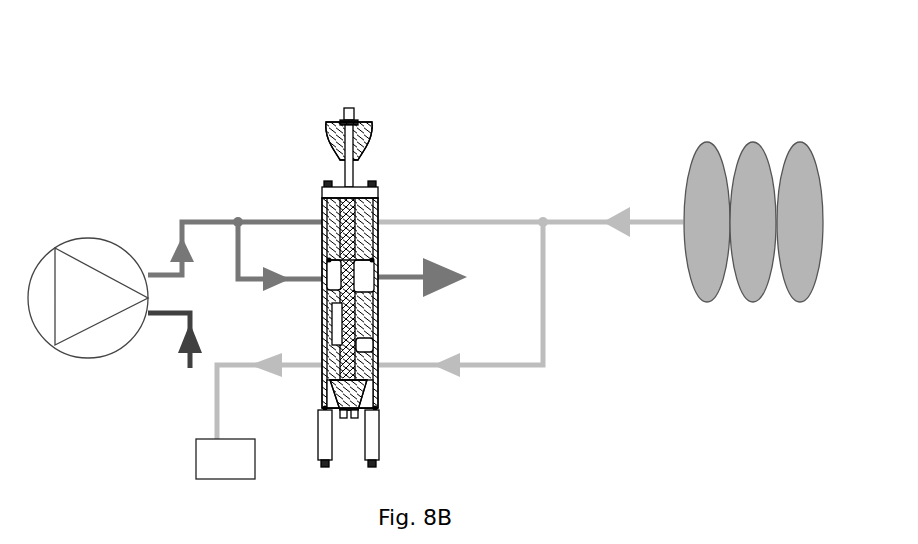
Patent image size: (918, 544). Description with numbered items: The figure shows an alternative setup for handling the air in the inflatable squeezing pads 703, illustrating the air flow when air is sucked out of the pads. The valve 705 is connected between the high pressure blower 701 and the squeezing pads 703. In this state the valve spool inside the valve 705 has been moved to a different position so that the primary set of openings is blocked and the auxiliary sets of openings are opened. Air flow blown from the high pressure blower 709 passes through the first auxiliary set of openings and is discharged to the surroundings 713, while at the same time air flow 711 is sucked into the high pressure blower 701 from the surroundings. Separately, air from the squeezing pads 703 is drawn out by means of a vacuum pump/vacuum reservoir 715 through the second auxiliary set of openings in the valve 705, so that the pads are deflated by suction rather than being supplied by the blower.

The high pressure blower 701 is at (85, 245).
The inflatable squeezing pads 703 is at (713, 167).
The valve 705 is at (355, 120).
The air flow blown from high pressure blower 709 is at (188, 255).
The air flow sucked to the high pressure blower 711 is at (188, 365).
The surroundings 713 is at (432, 298).
The vacuum pump/vacuum reservoir 715 is at (205, 480).